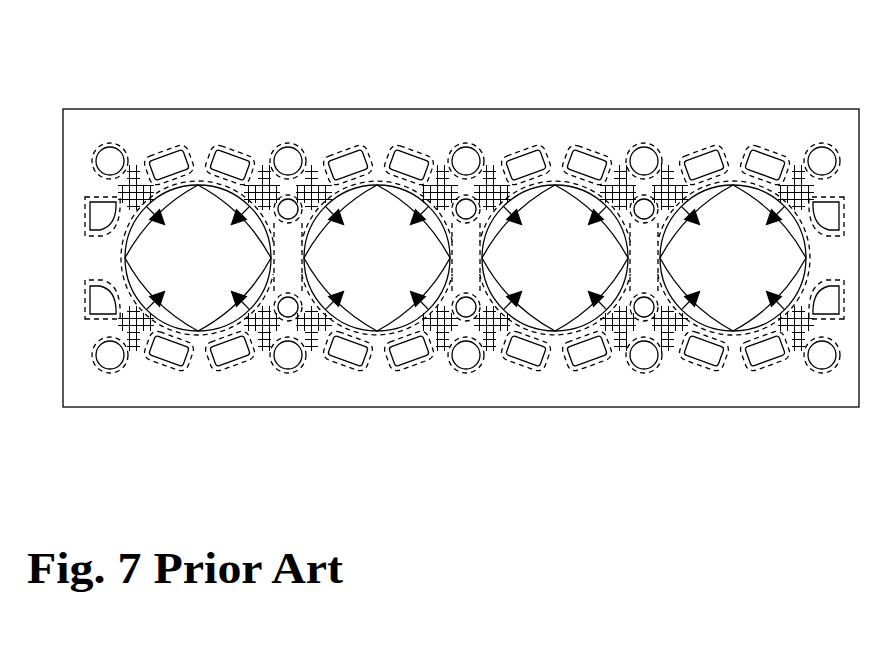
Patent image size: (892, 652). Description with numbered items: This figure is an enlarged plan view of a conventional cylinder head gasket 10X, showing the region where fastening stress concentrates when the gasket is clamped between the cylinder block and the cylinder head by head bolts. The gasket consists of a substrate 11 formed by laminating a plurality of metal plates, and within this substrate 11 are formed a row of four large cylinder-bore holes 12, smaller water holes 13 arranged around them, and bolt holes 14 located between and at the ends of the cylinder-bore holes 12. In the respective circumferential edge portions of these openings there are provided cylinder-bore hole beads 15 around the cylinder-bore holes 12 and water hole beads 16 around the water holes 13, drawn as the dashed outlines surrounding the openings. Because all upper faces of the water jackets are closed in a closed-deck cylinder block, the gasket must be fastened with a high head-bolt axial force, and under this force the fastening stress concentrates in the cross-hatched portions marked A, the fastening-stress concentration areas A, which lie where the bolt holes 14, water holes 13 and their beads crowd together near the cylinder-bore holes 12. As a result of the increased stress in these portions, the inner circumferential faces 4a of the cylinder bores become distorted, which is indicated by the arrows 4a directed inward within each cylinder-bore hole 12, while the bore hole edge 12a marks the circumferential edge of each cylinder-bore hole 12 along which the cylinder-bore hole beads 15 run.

The cylinder head gasket 10X is at (463, 96).
The substrate 11 is at (402, 108).
The cylinder-bore holes 12 is at (213, 280).
The bore hole edge 12a is at (465, 258).
The inner circumferential faces 4a is at (234, 216).
The water holes 13 is at (170, 152).
The bolt holes 14 is at (112, 148).
The cylinder-bore hole beads 15 is at (228, 152).
The water hole beads 16 is at (106, 152).
The fastening-stress concentration areas A is at (135, 170).